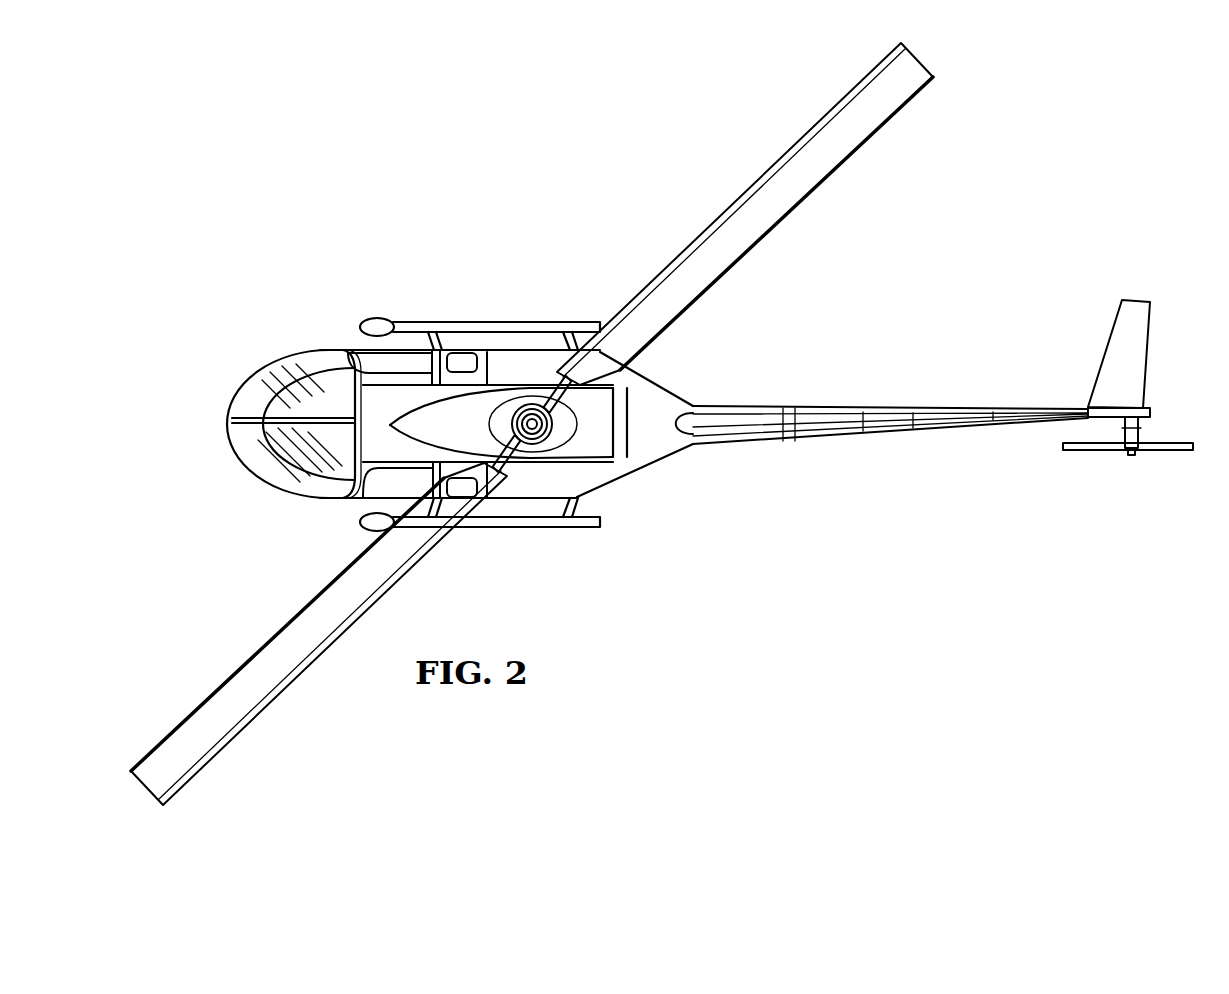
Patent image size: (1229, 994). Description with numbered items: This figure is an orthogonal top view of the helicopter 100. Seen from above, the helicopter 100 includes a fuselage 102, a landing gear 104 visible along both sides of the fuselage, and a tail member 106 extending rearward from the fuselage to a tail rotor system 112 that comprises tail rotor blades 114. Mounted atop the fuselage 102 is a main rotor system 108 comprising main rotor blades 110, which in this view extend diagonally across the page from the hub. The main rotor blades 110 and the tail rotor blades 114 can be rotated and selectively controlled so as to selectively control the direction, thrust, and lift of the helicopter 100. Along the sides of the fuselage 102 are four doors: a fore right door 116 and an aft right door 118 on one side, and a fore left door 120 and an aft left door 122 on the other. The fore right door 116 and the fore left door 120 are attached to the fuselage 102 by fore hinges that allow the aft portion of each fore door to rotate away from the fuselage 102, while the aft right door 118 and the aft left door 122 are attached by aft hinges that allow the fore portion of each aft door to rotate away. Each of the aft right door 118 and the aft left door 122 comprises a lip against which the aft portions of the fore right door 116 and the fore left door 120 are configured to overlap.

The helicopter 100 is at (382, 124).
The fuselage 102 is at (380, 417).
The landing gear 104 is at (540, 522).
The tail member 106 is at (888, 406).
The main rotor system 108 is at (523, 376).
The main rotor blades 110 is at (787, 198).
The tail rotor system 112 is at (1128, 474).
The tail rotor blades 114 is at (1171, 452).
The fore right door 116 is at (393, 374).
The aft right door 118 is at (465, 378).
The fore left door 120 is at (400, 483).
The aft left door 122 is at (450, 462).